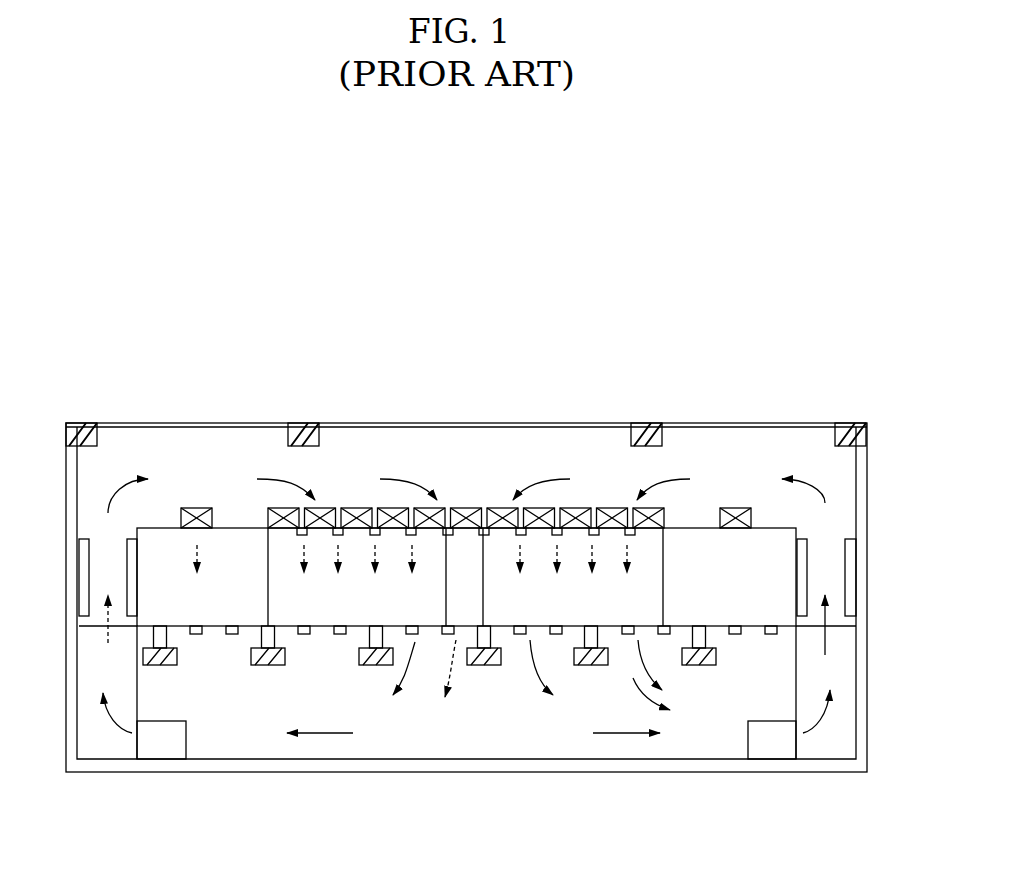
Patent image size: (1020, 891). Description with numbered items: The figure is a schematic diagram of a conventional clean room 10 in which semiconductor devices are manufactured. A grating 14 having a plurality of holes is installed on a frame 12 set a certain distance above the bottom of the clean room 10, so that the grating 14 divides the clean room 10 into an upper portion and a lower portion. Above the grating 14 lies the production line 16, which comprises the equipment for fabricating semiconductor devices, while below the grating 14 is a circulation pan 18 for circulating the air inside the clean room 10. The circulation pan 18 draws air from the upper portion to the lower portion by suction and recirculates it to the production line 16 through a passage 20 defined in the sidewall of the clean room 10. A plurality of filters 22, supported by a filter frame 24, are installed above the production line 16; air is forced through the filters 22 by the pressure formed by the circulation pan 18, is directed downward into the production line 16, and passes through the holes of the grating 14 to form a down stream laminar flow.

The clean room 10 is at (705, 312).
The frame 12 is at (442, 636).
The grating 14 is at (212, 626).
The production line 16 is at (400, 583).
The circulation pan 18 is at (170, 733).
The passage 20 is at (858, 655).
The filters 22 is at (468, 507).
The filter frame 24 is at (629, 528).